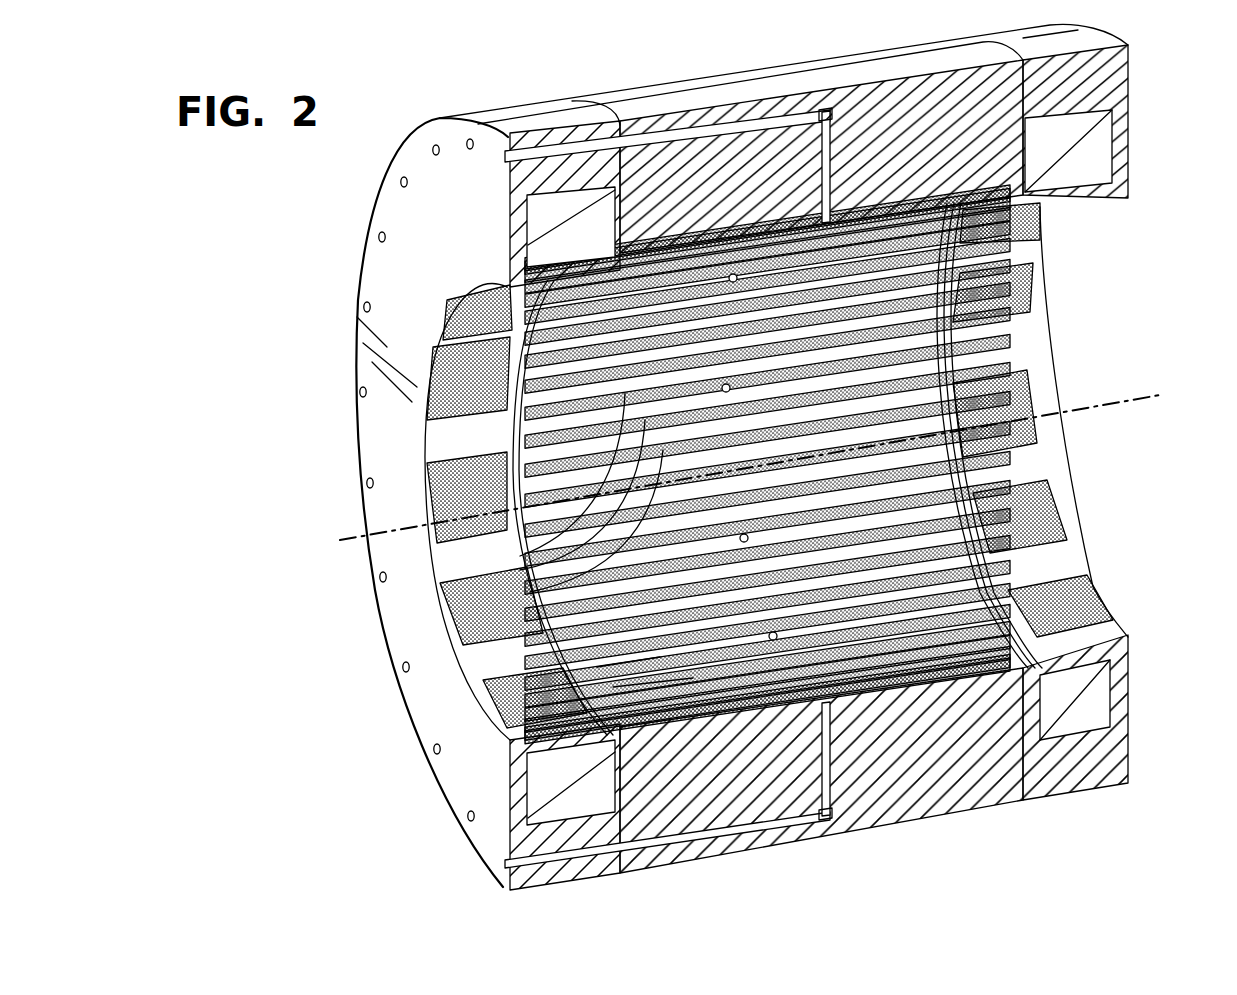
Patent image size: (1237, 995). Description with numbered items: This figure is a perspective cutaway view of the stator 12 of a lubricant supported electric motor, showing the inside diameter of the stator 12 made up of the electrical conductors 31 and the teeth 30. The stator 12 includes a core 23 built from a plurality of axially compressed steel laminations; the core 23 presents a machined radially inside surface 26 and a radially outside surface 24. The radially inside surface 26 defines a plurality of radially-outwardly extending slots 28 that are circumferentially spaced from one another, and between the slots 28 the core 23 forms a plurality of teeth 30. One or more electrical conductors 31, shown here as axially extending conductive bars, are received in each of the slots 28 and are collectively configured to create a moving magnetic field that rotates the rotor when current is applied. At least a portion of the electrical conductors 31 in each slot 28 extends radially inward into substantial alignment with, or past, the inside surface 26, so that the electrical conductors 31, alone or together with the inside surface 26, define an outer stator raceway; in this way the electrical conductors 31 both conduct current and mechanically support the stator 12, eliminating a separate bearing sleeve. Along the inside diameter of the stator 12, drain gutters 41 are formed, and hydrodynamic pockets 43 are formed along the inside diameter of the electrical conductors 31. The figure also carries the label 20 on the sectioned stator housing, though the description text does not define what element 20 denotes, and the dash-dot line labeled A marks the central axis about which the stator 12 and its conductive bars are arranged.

The stator 12 is at (823, 55).
The end plate spacer 20 is at (822, 167).
The core 23 is at (953, 743).
The radially outside surface 24 is at (767, 850).
The radially inside surface 26 is at (940, 600).
The slots 28 is at (572, 470).
The teeth 30 is at (895, 358).
The electrical conductors 31 is at (1000, 300).
The drain gutters 41 is at (655, 658).
The hydrodynamic pockets 43 is at (1030, 628).
The axis A is at (1140, 400).